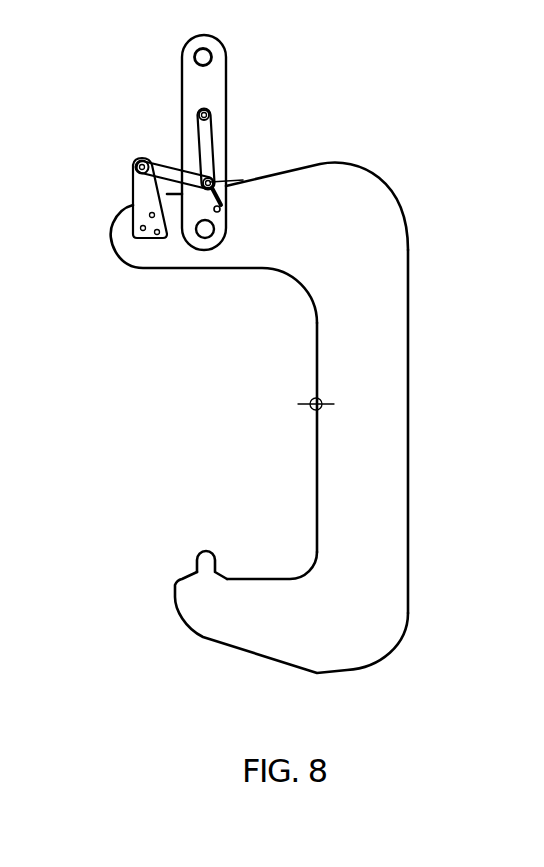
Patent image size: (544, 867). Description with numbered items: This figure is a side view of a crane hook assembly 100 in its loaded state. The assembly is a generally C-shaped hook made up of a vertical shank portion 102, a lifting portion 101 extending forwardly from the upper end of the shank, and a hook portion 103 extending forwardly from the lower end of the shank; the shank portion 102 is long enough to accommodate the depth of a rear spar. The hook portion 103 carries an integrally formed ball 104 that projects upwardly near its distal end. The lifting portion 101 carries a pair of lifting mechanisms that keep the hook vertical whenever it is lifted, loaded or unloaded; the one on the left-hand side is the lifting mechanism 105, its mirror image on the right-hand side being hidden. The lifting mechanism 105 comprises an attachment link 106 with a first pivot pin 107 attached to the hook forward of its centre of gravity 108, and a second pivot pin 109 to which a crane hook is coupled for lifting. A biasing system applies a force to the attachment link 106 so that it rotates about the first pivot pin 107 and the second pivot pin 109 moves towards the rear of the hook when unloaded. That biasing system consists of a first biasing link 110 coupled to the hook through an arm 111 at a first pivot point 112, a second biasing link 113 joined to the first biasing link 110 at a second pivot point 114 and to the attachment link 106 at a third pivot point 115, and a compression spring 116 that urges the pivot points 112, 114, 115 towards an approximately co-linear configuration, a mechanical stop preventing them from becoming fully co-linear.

The hook assembly 100 is at (295, 381).
The lifting portion 101 is at (240, 256).
The vertical shank portion 102 is at (388, 432).
The hook portion 103 is at (262, 638).
The ball 104 is at (193, 562).
The lifting mechanism 105 is at (179, 165).
The attachment link 106 is at (219, 88).
The first pivot pin 107 is at (198, 247).
The centre of gravity 108 is at (312, 407).
The second pivot pin 109 is at (211, 52).
The first biasing link 110 is at (138, 178).
The arm 111 is at (138, 193).
The first pivot point 112 is at (135, 165).
The second biasing link 113 is at (216, 153).
The second pivot point 114 is at (243, 181).
The third pivot point 115 is at (199, 111).
The compression spring 116 is at (226, 202).